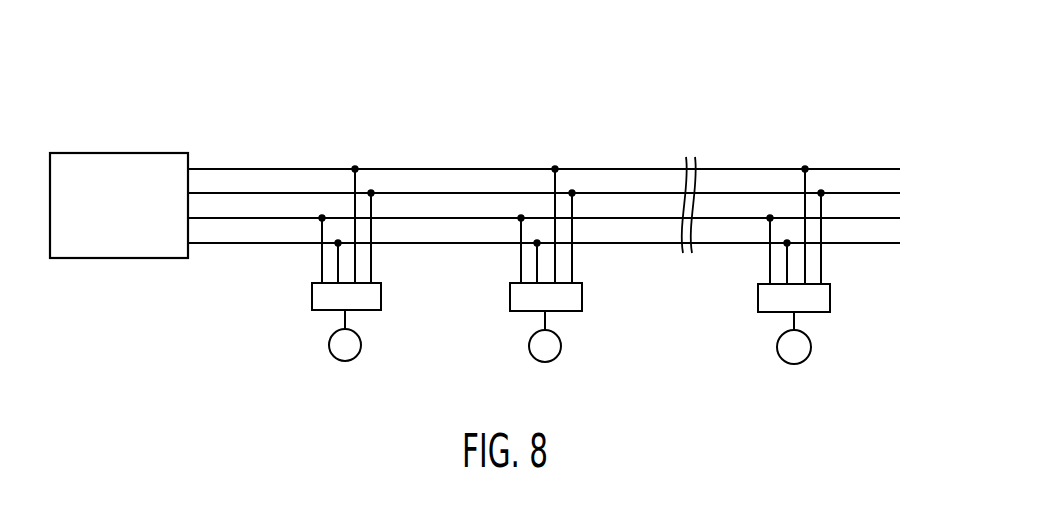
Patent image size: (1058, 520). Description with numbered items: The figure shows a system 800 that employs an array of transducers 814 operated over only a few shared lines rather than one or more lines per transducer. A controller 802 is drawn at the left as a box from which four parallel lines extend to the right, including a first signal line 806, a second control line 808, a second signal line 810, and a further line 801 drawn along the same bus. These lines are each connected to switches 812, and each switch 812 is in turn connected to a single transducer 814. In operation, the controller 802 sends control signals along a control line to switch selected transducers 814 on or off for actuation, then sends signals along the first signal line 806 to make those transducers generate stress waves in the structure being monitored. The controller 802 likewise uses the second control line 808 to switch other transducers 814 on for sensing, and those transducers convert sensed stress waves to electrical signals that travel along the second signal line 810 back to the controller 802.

The system 800 is at (727, 74).
The controller 802 is at (133, 210).
The bus line 801 is at (218, 244).
The first signal line 806 is at (267, 219).
The second control line 808 is at (215, 192).
The second signal line 810 is at (272, 168).
The switch 812 is at (381, 300).
The transducer 814 is at (357, 356).